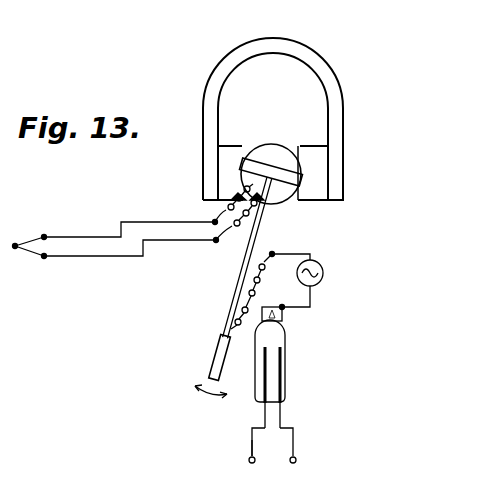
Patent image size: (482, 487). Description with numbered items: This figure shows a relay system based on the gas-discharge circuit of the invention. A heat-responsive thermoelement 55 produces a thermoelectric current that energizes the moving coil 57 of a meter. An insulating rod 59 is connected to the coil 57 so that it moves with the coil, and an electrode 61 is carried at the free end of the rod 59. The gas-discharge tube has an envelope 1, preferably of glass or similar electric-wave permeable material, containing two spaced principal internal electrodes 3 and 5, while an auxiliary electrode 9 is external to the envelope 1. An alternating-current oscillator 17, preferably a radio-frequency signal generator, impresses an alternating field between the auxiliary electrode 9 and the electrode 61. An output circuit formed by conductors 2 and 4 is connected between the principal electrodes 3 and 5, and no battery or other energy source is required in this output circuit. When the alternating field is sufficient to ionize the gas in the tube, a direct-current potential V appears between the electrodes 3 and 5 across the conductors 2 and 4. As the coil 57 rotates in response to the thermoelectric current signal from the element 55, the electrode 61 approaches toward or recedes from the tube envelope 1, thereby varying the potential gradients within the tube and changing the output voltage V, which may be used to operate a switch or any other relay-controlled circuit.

The envelope 1 is at (285, 341).
The conductor 2 is at (251, 443).
The electrode 3 is at (263, 379).
The conductor 4 is at (294, 445).
The electrode 5 is at (281, 378).
The auxiliary electrode 9 is at (282, 314).
The oscillator 17 is at (324, 272).
The thermoelement 55 is at (44, 236).
The moving coil 57 is at (278, 158).
The insulating rod 59 is at (240, 279).
The electrode 61 is at (216, 352).